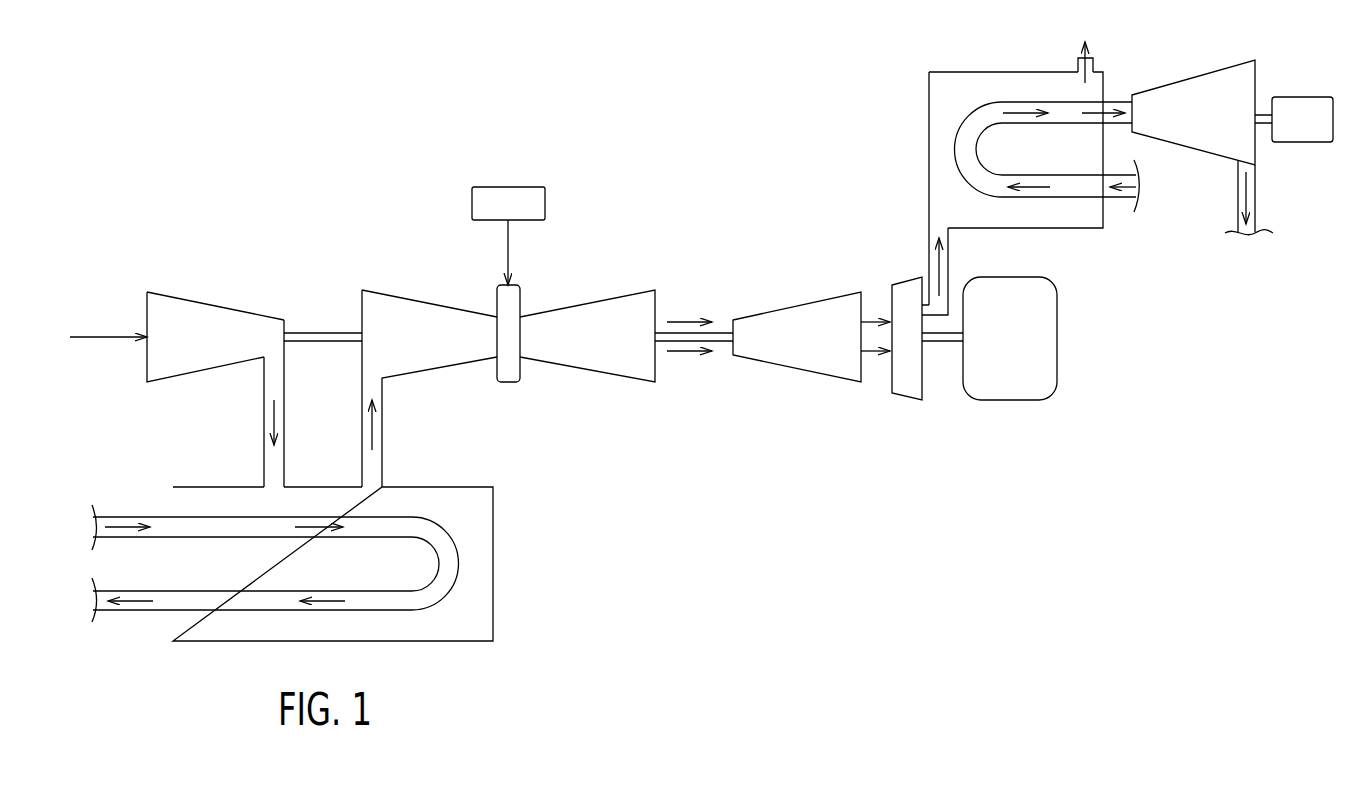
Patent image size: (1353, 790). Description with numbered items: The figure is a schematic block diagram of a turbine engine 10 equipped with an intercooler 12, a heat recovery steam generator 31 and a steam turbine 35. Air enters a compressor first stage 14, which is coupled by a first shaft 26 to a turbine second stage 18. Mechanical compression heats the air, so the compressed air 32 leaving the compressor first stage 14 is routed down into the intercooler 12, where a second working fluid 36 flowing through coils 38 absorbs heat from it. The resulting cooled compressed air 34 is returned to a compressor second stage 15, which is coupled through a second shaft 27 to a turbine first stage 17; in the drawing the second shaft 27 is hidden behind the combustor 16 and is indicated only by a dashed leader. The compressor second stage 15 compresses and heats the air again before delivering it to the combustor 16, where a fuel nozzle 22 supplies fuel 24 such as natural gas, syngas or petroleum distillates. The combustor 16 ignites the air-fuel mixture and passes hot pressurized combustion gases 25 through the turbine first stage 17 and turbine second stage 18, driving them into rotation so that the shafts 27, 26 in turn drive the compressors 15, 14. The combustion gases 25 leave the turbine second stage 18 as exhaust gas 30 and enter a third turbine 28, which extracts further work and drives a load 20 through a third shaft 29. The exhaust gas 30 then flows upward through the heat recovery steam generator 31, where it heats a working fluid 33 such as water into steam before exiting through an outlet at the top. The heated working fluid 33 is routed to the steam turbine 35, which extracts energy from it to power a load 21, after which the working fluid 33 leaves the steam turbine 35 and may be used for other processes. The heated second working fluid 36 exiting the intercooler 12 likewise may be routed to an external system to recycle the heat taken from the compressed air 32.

The turbine engine 10 is at (864, 163).
The intercooler 12 is at (493, 562).
The compressor first stage 14 is at (218, 305).
The compressor second stage 15 is at (392, 294).
The combustor 16 is at (508, 383).
The turbine first stage 17 is at (608, 298).
The turbine second stage 18 is at (801, 301).
The load 20 is at (1040, 278).
The load 21 is at (1302, 97).
The fuel nozzle 22 is at (118, 333).
The fuel 24 is at (507, 259).
The combustion gases 25 is at (687, 317).
The first shaft 26 is at (323, 330).
The second shaft 27 is at (533, 285).
The third turbine 28 is at (907, 398).
The third shaft 29 is at (940, 344).
The exhaust gas 30 is at (868, 318).
The heat recovery steam generator 31 is at (970, 72).
The compressed air 32 is at (266, 420).
The working fluid 33 is at (1025, 112).
The cooled compressed air 34 is at (371, 430).
The steam turbine 35 is at (1197, 78).
The second working fluid 36 is at (123, 527).
The coils 38 is at (312, 517).